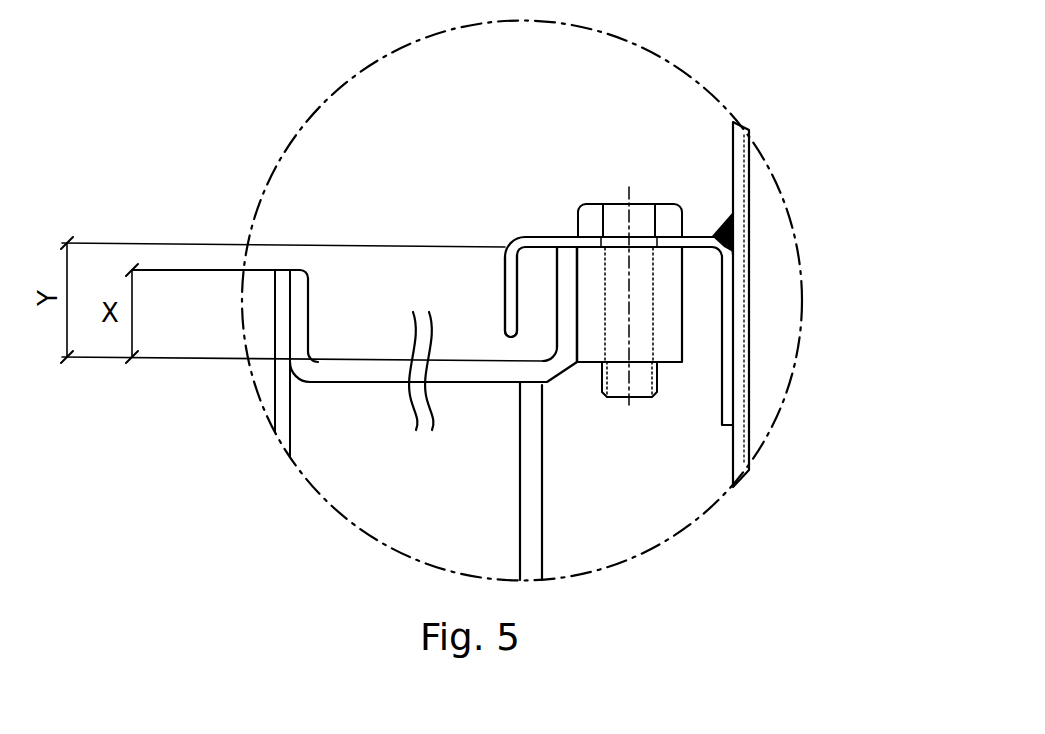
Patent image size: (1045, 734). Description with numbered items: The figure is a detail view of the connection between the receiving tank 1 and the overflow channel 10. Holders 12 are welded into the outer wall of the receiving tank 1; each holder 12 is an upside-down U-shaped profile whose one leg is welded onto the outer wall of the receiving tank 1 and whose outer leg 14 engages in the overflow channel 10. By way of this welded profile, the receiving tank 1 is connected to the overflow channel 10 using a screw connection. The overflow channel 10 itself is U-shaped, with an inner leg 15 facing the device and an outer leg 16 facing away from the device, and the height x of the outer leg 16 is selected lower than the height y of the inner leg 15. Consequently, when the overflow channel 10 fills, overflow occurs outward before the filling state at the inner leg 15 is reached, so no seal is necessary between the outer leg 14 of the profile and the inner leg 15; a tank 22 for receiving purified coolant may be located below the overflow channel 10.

The receiving tank 1 is at (795, 301).
The overflow channel 10 is at (388, 307).
The holder 12 is at (700, 232).
The outer leg 14 is at (506, 284).
The inner leg 15 is at (572, 267).
The outer leg 16 is at (291, 246).
The tank 22 is at (399, 510).